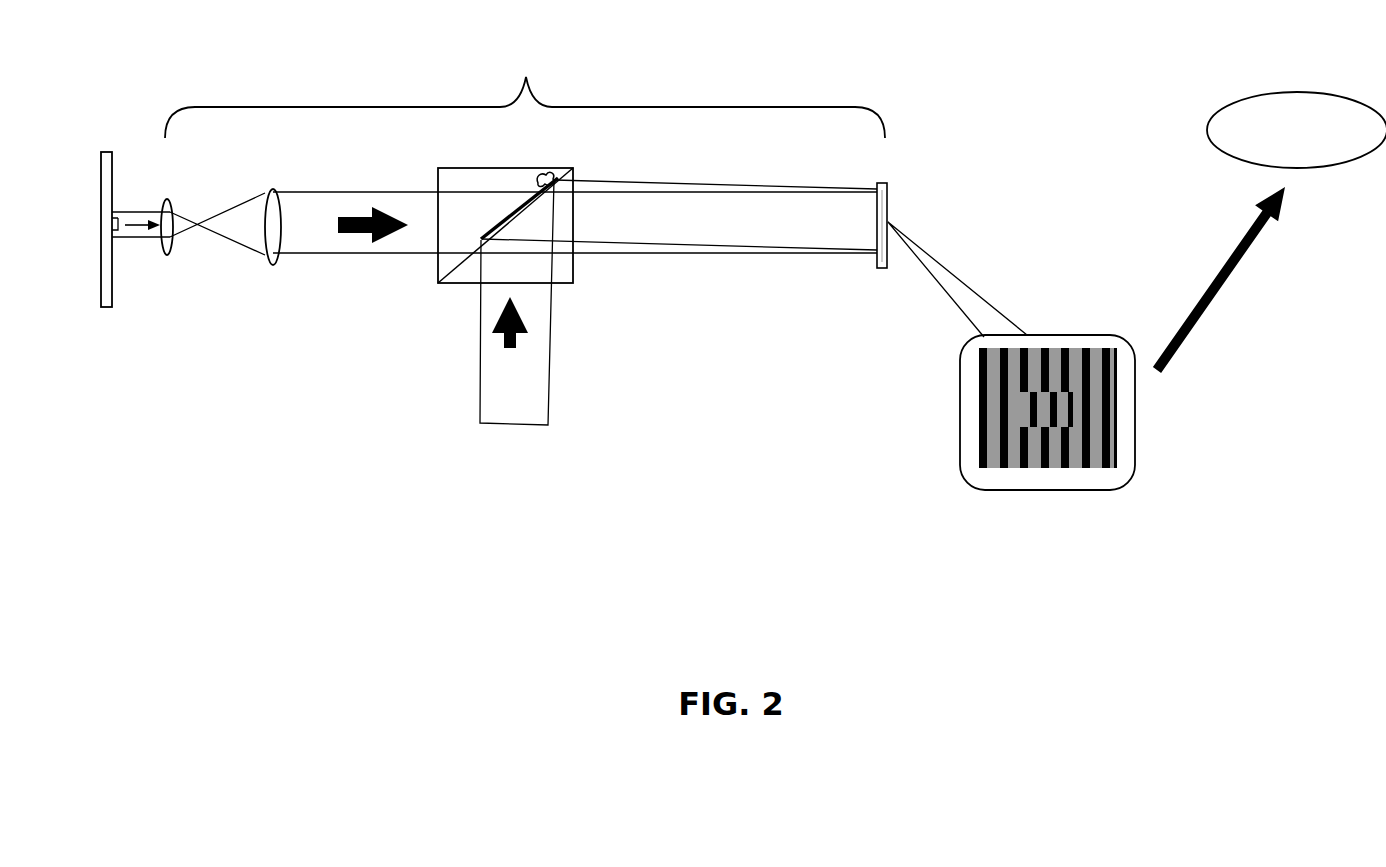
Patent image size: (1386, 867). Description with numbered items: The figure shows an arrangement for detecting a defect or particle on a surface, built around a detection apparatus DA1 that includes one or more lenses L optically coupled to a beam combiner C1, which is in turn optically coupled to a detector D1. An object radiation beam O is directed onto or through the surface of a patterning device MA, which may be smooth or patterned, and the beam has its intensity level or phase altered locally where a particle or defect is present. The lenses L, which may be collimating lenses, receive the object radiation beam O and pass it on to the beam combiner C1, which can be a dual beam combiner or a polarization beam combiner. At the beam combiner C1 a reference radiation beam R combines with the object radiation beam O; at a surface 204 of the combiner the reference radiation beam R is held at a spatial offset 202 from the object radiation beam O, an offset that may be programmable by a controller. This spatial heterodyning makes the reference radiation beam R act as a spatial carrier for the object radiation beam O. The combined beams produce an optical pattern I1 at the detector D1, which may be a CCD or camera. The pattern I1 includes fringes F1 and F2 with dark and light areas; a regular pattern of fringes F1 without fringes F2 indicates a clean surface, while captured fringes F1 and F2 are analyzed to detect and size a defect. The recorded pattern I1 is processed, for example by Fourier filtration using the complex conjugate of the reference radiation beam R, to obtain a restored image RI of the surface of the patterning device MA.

The detection apparatus DA1 is at (525, 89).
The patterning device MA is at (115, 297).
The object radiation beam O is at (494, 220).
The lenses L is at (163, 253).
The beam combiner C1 is at (570, 261).
The surface of combiner 204 is at (455, 263).
The spatial offset 202 is at (541, 174).
The reference radiation beam R is at (517, 302).
The detector D1 is at (882, 255).
The optical pattern I1 is at (1083, 444).
The fringes F1 is at (1012, 453).
The fringes F2 is at (1068, 457).
The restored image RI is at (1269, 232).